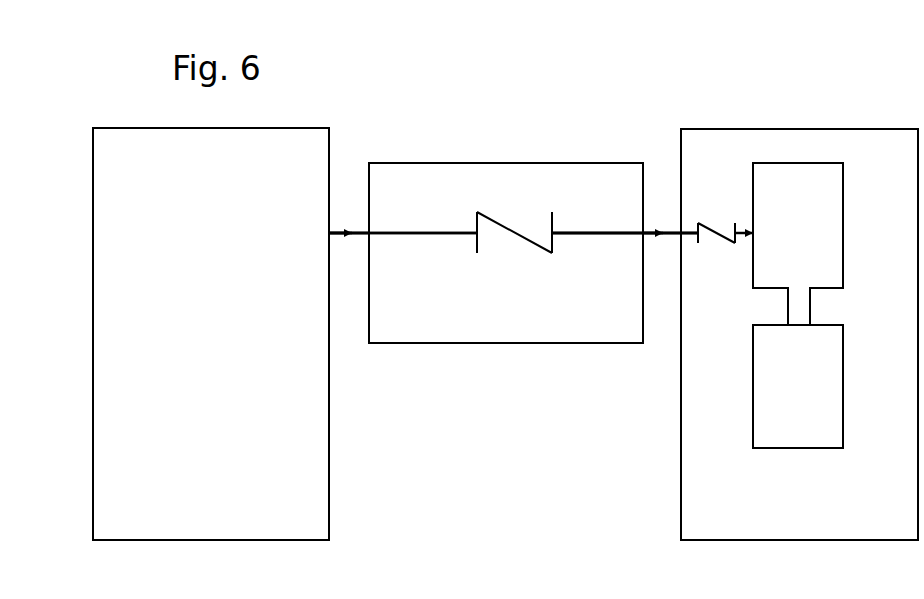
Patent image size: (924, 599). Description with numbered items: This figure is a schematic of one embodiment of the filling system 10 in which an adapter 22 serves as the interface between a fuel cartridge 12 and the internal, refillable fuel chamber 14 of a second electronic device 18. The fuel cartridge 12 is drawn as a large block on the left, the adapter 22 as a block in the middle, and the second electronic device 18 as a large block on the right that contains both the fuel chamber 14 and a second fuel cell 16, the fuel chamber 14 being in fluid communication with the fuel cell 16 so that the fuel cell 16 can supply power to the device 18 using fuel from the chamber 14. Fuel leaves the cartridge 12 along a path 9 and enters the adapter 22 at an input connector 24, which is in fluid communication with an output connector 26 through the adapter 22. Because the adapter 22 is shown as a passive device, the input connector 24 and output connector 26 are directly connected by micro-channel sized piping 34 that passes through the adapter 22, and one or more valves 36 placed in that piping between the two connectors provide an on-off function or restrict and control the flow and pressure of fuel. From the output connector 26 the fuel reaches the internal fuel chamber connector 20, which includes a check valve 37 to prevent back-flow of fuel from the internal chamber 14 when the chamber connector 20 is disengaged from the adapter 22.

The connection 9 is at (334, 236).
The filling system 10 is at (492, 410).
The fuel cartridge 12 is at (199, 220).
The internal refillable fuel chamber 14 is at (785, 213).
The second fuel cell 16 is at (785, 375).
The second electronic device 18 is at (768, 129).
The internal fuel chamber connector 20 is at (672, 233).
The adapter 22 is at (492, 163).
The input connector 24 is at (360, 233).
The output connector 26 is at (652, 236).
The micro-channel sized piping 34 is at (420, 236).
The valve 36 is at (516, 234).
The check valve 37 is at (711, 232).